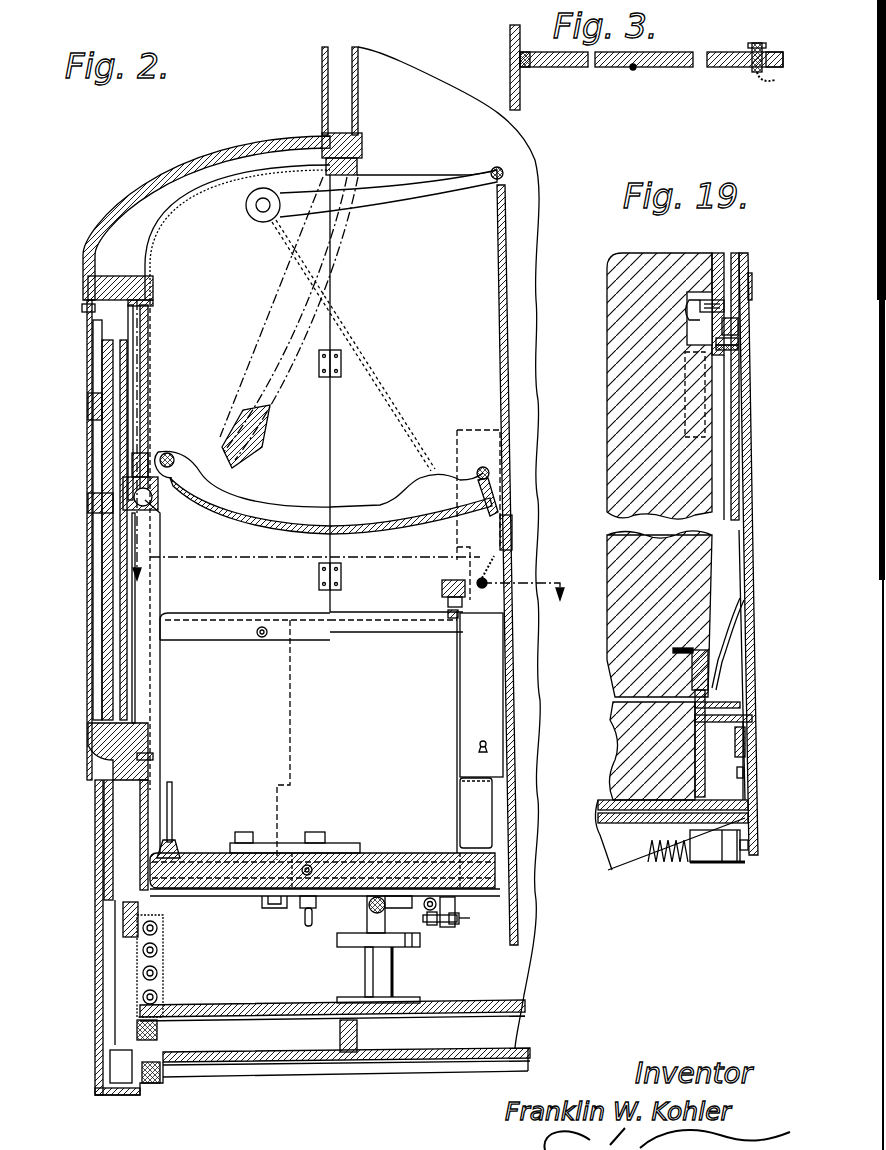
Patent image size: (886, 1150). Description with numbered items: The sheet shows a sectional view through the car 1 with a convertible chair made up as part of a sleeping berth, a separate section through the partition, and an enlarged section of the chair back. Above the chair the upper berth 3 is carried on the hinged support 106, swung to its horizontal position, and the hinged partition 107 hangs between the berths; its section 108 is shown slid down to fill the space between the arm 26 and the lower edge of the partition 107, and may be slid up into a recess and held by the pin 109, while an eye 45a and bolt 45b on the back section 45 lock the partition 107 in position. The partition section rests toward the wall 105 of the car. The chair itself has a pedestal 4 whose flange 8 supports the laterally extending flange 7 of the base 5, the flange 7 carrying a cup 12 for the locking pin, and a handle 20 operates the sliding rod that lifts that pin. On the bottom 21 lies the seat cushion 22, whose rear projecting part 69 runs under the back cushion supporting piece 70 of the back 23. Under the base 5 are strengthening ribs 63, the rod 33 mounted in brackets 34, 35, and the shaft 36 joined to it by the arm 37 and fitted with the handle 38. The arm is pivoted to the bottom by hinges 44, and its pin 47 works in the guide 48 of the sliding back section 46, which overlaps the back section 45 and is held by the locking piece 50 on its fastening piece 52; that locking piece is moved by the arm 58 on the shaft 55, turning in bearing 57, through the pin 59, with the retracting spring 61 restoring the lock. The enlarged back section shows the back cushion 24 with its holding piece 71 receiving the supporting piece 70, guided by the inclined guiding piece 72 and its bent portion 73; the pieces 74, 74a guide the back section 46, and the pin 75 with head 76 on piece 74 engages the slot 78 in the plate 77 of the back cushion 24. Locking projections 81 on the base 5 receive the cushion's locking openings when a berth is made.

In FIG. 2, the car 1 is at (138, 183).
In FIG. 2, the upper berth 3 is at (347, 464).
In FIG. 2, the pedestal 4 is at (363, 982).
In FIG. 2, the base 5 is at (307, 922).
In FIG. 19, the base 5 is at (602, 815).
In FIG. 2, the laterally extending flange 7 is at (327, 937).
In FIG. 2, the flange 8 is at (337, 960).
In FIG. 2, the cup 12 is at (390, 950).
In FIG. 2, the handle 20 is at (381, 896).
In FIG. 19, the bottom 21 is at (602, 800).
In FIG. 19, the seat cushion 22 is at (628, 722).
In FIG. 19, the back 23 is at (754, 437).
In FIG. 2, the back cushion 24 is at (205, 857).
In FIG. 19, the back cushion 24 is at (648, 267).
In FIG. 2, the arm 26 is at (470, 790).
In FIG. 2, the rod 33 is at (459, 918).
In FIG. 2, the bracket 34 is at (330, 947).
In FIG. 2, the bracket 35 is at (457, 922).
In FIG. 2, the shaft 36 is at (428, 900).
In FIG. 2, the arm 37 is at (440, 923).
In FIG. 2, the handle 38 is at (437, 925).
In FIG. 2, the hinge 44 is at (253, 890).
In FIG. 2, the back section 45 is at (415, 641).
In FIG. 19, the back section 45 is at (748, 462).
In FIG. 2, the eye 45a is at (450, 618).
In FIG. 2, the bolt 45b is at (446, 590).
In FIG. 2, the back section 46 is at (245, 736).
In FIG. 19, the back section 46 is at (742, 400).
In FIG. 2, the pin 47 is at (170, 843).
In FIG. 2, the guide 48 is at (172, 807).
In FIG. 19, the locking piece 50 is at (745, 792).
In FIG. 19, the fastening piece 52 is at (745, 770).
In FIG. 2, the shaft 55 is at (293, 905).
In FIG. 19, the shaft 55 is at (678, 864).
In FIG. 19, the bearing 57 is at (724, 864).
In FIG. 19, the arm 58 is at (735, 864).
In FIG. 19, the pin 59 is at (738, 842).
In FIG. 19, the retracting spring 61 is at (660, 864).
In FIG. 2, the strengthening ribs 63 is at (410, 900).
In FIG. 19, the strengthening ribs 63 is at (613, 866).
In FIG. 19, the projecting part 69 is at (702, 864).
In FIG. 2, the supporting piece 70 is at (265, 845).
In FIG. 19, the supporting piece 70 is at (693, 750).
In FIG. 19, the holding piece 71 is at (692, 658).
In FIG. 2, the inclined guiding piece 72 is at (245, 832).
In FIG. 19, the inclined guiding piece 72 is at (750, 588).
In FIG. 19, the bent portion 73 is at (718, 680).
In FIG. 19, the guide piece 74 is at (745, 258).
In FIG. 19, the guide piece 74a is at (748, 745).
In FIG. 19, the pin 75 is at (705, 305).
In FIG. 19, the head 76 is at (692, 322).
In FIG. 19, the plate 77 is at (747, 350).
In FIG. 19, the slot 78 is at (697, 337).
In FIG. 2, the locking projection 81 is at (292, 857).
In FIG. 3, the wall 105 is at (510, 35).
In FIG. 2, the hinged support 106 is at (360, 523).
In FIG. 2, the hinged partition 107 is at (402, 180).
In FIG. 3, the hinged partition 107 is at (710, 63).
In FIG. 2, the section 108 is at (470, 693).
In FIG. 3, the section 108 is at (784, 56).
In FIG. 2, the pin 109 is at (486, 580).
In FIG. 3, the pin 109 is at (755, 45).